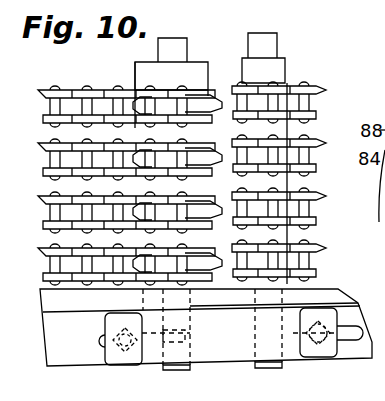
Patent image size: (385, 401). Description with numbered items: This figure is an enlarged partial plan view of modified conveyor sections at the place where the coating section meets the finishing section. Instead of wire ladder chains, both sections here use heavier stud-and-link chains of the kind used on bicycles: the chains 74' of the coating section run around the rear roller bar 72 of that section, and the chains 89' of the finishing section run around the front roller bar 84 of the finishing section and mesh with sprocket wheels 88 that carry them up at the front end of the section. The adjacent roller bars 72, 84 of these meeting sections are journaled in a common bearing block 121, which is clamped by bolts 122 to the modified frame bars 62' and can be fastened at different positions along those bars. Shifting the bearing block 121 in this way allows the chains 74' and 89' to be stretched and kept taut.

The stud-and-link chains of the finishing section 89' is at (116, 172).
The stud-and-link chains of the coating section 74' is at (293, 168).
The sprocket wheels 88 is at (136, 90).
The front roller bar 84 is at (173, 50).
The rear roller bar 72 is at (270, 46).
The modified frame bars 62' is at (206, 313).
The common bearing block 121 is at (105, 325).
The bolts 122 is at (318, 322).